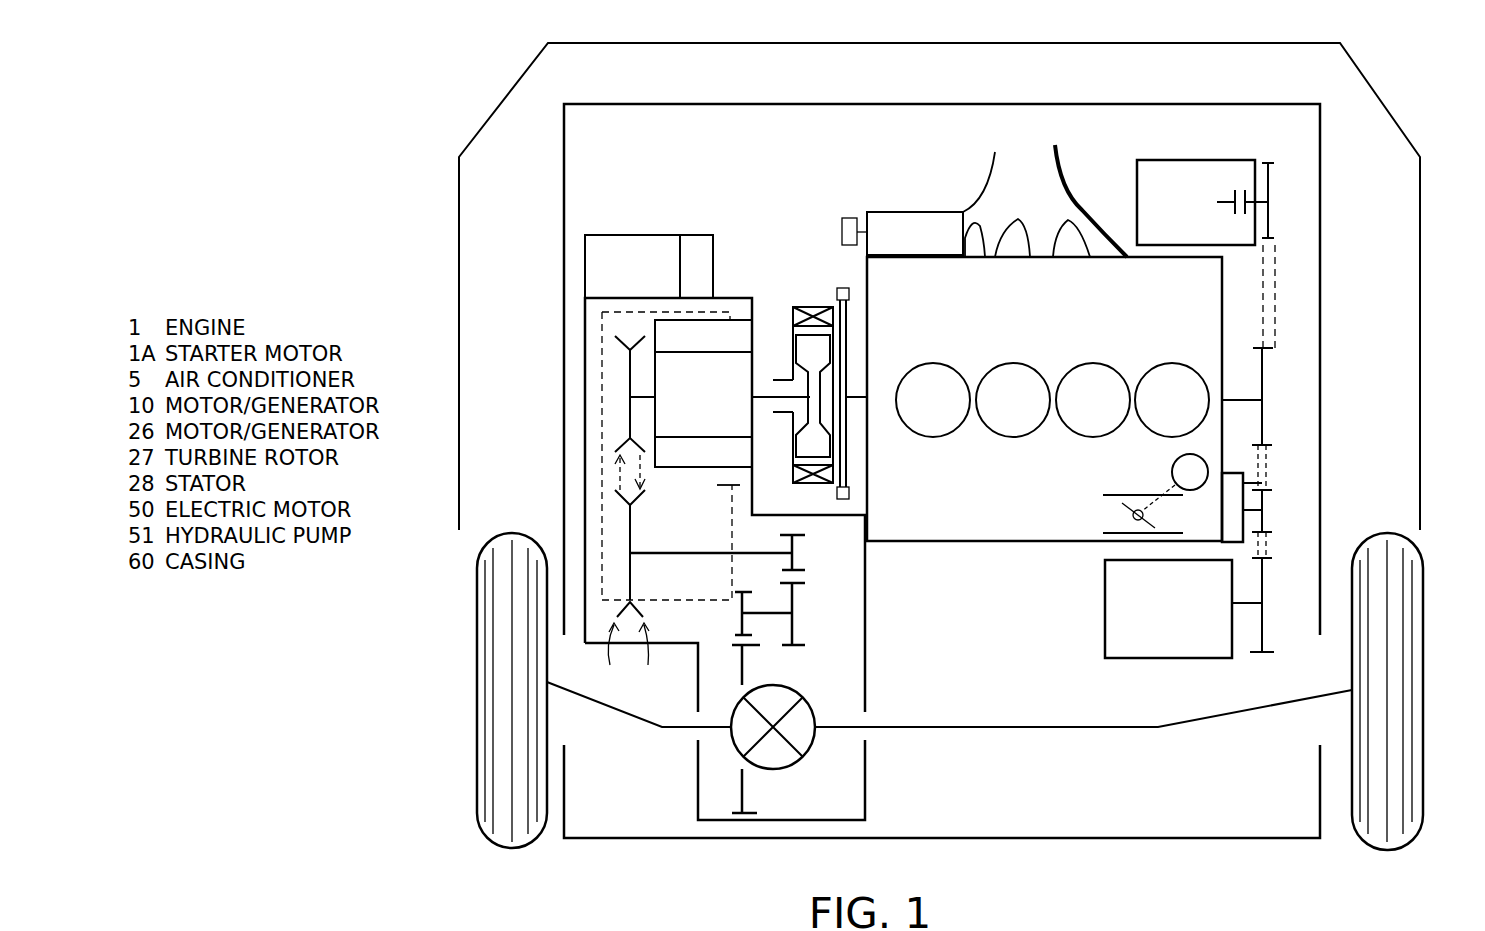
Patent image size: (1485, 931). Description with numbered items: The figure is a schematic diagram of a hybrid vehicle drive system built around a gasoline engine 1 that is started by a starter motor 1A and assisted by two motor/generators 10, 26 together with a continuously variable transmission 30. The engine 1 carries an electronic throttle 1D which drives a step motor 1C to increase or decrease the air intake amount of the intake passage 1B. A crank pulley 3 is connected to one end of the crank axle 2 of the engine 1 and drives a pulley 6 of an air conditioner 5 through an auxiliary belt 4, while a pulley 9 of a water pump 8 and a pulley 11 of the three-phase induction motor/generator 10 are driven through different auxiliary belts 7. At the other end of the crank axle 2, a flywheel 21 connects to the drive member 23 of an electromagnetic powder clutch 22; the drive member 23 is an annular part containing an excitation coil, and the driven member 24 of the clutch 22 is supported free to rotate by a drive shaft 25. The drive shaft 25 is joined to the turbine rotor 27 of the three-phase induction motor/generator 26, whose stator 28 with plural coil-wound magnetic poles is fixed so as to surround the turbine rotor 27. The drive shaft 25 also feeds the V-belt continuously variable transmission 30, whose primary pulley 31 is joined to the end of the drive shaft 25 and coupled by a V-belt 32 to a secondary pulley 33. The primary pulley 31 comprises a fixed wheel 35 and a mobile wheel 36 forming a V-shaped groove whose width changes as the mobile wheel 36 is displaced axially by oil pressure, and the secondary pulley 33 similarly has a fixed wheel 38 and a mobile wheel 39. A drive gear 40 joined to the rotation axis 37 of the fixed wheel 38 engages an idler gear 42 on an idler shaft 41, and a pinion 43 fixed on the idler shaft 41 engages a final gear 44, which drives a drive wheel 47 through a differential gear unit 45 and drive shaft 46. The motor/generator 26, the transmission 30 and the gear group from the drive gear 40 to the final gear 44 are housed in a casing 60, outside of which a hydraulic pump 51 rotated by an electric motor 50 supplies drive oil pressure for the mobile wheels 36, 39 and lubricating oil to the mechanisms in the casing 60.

The gasoline engine 1 is at (1044, 373).
The starter motor 1A is at (918, 212).
The intake passage 1B is at (1105, 497).
The step motor 1C is at (1192, 490).
The electronic throttle 1D is at (1128, 508).
The crank axle 2 is at (855, 385).
The crank pulley 3 is at (1262, 422).
The auxiliary belt 4 is at (1275, 292).
The air conditioner 5 is at (1200, 180).
The pulley 6 is at (1268, 183).
The auxiliary belts 7 is at (1268, 548).
The water pump 8 is at (1243, 480).
The pulley 9 is at (1262, 520).
The motor/generator 10 is at (1155, 658).
The pulley 11 is at (1262, 630).
The flywheel 21 is at (838, 470).
The electromagnetic powder clutch 22 is at (826, 355).
The drive member 23 is at (823, 320).
The driven member 24 is at (800, 345).
The drive shaft 25 is at (762, 412).
The motor/generator 26 is at (696, 437).
The turbine rotor 27 is at (665, 460).
The stator 28 is at (721, 433).
The continuously variable transmission 30 is at (612, 407).
The primary pulley 31 is at (630, 368).
The V-belt 32 is at (626, 468).
The secondary pulley 33 is at (628, 535).
The fixed wheel 35 is at (637, 338).
The mobile wheel 36 is at (615, 338).
The rotation axis 37 is at (699, 556).
The fixed wheel 38 is at (648, 658).
The mobile wheel 39 is at (602, 658).
The drive gear 40 is at (798, 546).
The idler shaft 41 is at (752, 615).
The idler gear 42 is at (798, 600).
The pinion 43 is at (742, 625).
The final gear 44 is at (750, 785).
The differential gear unit 45 is at (805, 752).
The drive shaft 46 is at (634, 720).
The drive wheel 47 is at (477, 682).
The electric motor 50 is at (697, 240).
The hydraulic pump 51 is at (607, 235).
The casing 60 is at (866, 630).